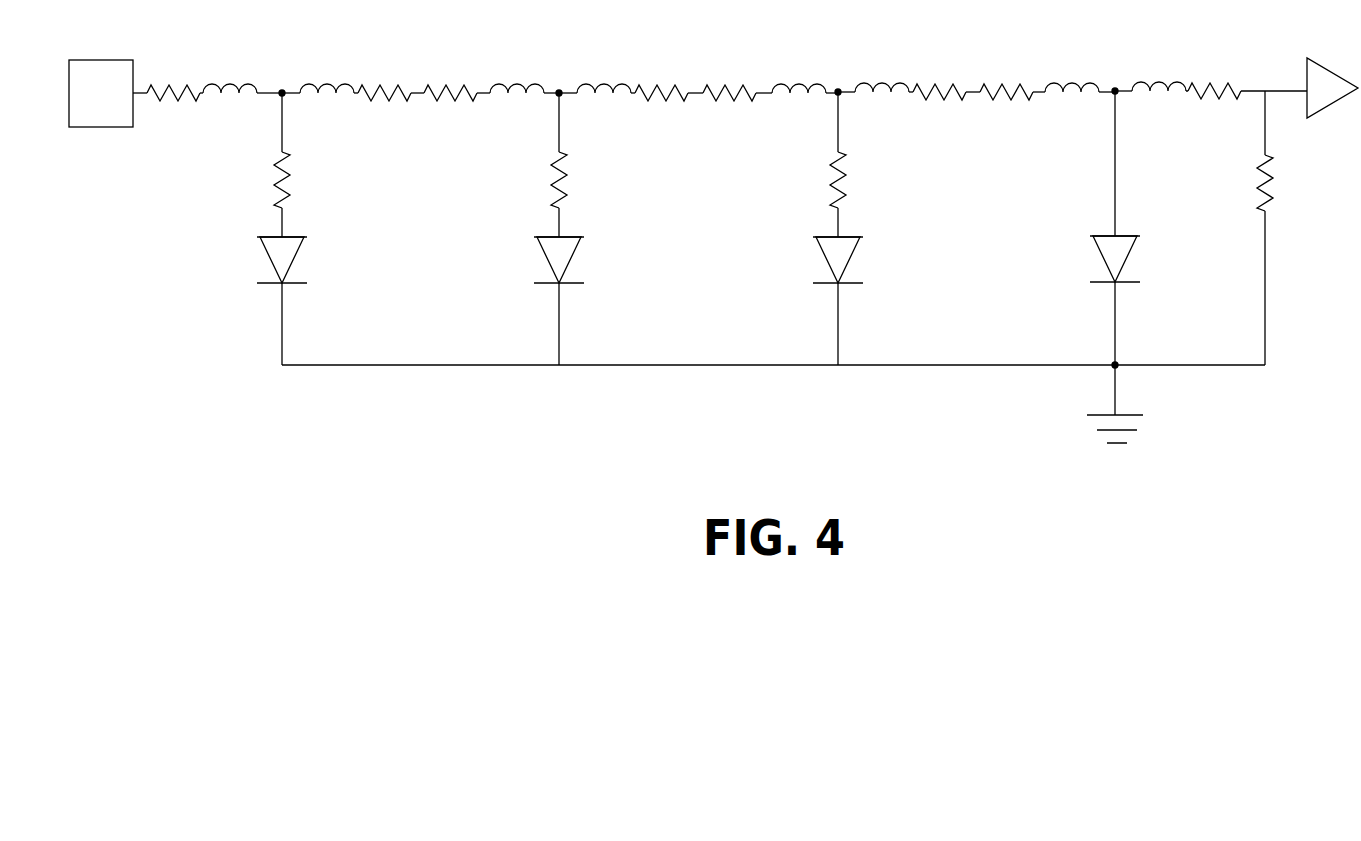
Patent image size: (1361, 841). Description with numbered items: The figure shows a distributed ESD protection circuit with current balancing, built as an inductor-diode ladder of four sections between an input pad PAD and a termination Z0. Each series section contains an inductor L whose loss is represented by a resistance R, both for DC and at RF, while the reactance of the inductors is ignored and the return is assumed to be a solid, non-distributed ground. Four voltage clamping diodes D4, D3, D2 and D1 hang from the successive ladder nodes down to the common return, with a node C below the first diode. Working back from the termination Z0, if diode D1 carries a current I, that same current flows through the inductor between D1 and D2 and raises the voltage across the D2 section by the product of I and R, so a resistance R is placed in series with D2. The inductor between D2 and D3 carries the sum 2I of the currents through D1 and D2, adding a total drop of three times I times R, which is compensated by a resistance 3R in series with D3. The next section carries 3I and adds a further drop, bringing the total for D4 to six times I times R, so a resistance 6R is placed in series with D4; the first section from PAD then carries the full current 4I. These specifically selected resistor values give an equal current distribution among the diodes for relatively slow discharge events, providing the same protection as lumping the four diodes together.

The pad PAD is at (101, 93).
The current 4I is at (207, 61).
The current 3I is at (369, 56).
The current 2I is at (837, 59).
The resistance R is at (483, 110).
The inductor L is at (617, 74).
The resistance 6R is at (260, 165).
The resistance 3R is at (537, 165).
The diode D4 is at (265, 260).
The diode D3 is at (544, 301).
The diode D2 is at (824, 301).
The diode D1 is at (1098, 228).
The current I is at (750, 263).
The node C is at (309, 324).
The termination Zo Z0 is at (1287, 228).